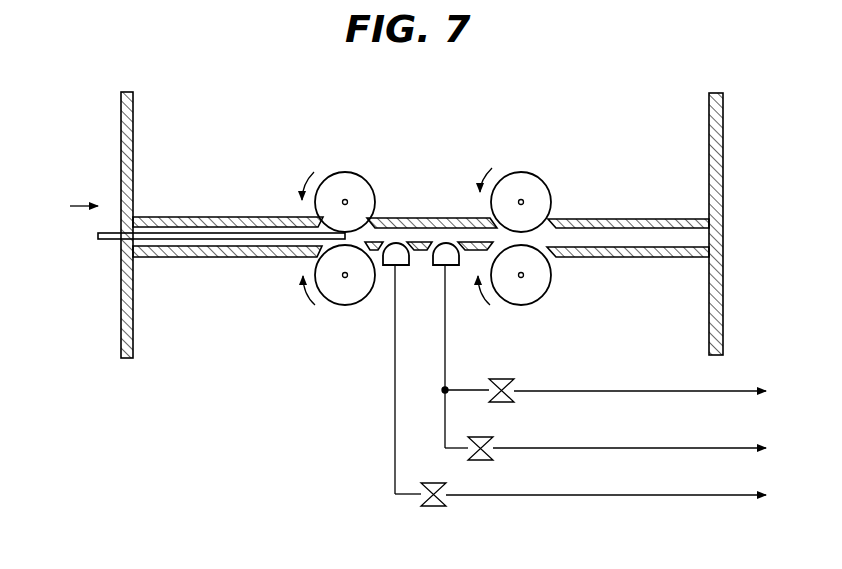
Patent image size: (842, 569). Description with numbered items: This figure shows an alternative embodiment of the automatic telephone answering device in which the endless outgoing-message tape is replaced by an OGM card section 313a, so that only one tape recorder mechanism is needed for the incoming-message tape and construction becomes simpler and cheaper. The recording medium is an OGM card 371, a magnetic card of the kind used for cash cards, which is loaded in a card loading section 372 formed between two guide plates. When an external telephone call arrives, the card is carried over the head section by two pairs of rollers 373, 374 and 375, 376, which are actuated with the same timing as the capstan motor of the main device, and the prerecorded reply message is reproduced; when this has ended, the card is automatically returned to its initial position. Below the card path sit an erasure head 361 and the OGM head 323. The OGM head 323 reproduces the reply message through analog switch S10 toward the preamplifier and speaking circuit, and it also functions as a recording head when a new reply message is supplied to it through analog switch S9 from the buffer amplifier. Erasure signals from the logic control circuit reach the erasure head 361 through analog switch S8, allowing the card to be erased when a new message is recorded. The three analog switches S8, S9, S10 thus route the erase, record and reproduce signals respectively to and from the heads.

The OGM card section 313a is at (252, 177).
The OGM card 371 is at (97, 237).
The card loading section 372 is at (122, 252).
The roller 373 is at (342, 306).
The roller 374 is at (376, 196).
The roller 375 is at (548, 290).
The roller 376 is at (550, 193).
The erasure head 361 is at (390, 269).
The OGM head 323 is at (437, 271).
The analog switch S8 is at (443, 484).
The analog switch S9 is at (490, 438).
The analog switch S10 is at (510, 380).